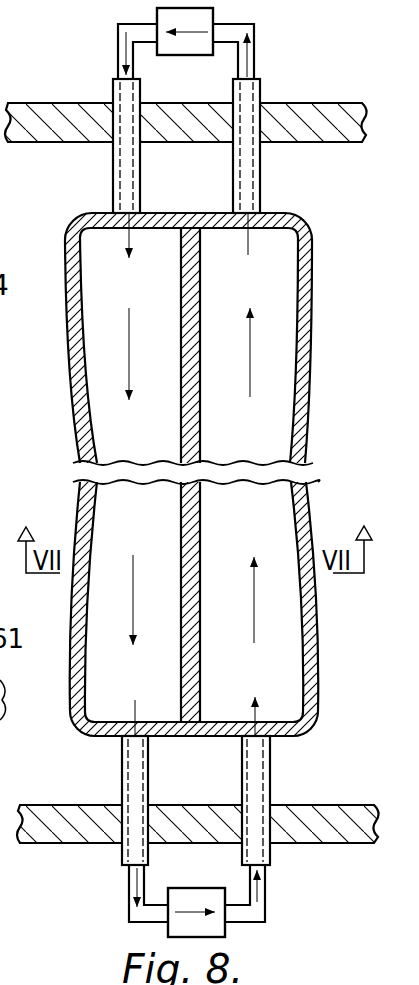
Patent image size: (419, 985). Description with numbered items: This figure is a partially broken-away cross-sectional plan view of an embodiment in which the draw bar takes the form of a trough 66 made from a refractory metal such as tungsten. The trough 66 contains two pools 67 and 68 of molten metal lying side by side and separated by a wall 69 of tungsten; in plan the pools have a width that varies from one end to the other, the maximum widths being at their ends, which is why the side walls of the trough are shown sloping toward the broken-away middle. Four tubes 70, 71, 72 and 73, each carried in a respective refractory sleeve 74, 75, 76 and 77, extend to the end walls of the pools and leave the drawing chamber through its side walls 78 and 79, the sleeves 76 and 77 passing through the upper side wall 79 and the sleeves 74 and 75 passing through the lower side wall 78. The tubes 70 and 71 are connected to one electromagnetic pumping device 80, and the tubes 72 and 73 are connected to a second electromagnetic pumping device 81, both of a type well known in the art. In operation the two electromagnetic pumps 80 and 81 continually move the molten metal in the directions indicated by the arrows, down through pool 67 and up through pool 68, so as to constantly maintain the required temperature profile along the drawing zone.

The trough 66 is at (303, 340).
The pool 67 is at (150, 445).
The pool 68 is at (262, 445).
The wall 69 is at (202, 315).
The tube 70 is at (258, 903).
The tube 71 is at (139, 912).
The tube 72 is at (124, 65).
The tube 73 is at (255, 57).
The refractory sleeve 74 is at (272, 777).
The refractory sleeve 75 is at (150, 777).
The refractory sleeve 76 is at (263, 177).
The refractory sleeve 77 is at (140, 177).
The side wall 78 is at (72, 822).
The side wall 79 is at (323, 118).
The electromagnetic pumping device 80 is at (207, 923).
The electromagnetic pumping device 81 is at (182, 20).